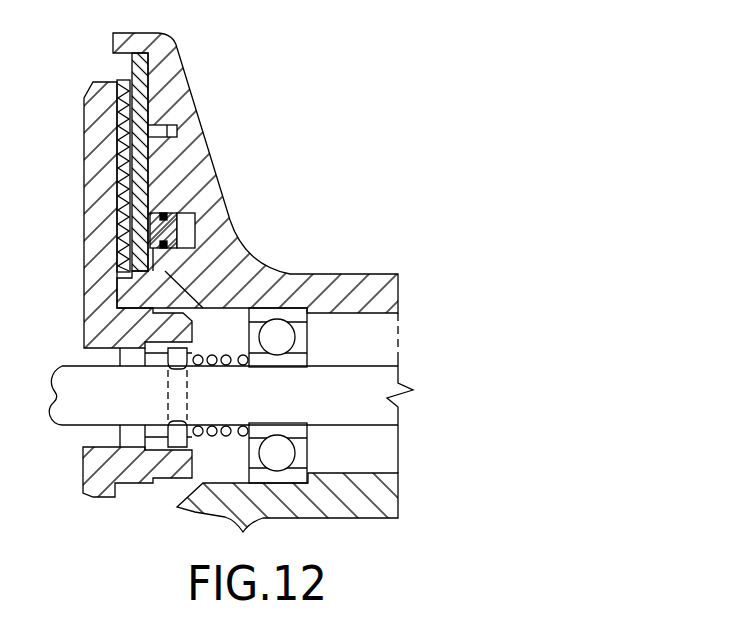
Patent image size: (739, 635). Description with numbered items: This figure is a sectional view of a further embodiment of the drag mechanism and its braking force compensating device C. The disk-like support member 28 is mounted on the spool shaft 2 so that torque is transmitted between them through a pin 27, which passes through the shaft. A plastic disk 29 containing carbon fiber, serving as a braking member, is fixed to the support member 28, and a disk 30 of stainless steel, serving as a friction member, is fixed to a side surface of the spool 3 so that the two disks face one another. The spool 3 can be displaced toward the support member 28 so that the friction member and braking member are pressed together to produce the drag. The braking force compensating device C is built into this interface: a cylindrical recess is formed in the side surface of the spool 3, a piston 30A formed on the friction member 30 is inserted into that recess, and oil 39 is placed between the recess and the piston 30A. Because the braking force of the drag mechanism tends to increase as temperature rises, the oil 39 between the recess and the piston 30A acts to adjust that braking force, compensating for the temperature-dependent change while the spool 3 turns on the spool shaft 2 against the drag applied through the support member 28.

The spool shaft 2 is at (70, 365).
The spool 3 is at (368, 280).
The pin 27 is at (177, 448).
The support member 28 is at (82, 205).
The plastic disk 29 is at (118, 80).
The disk 30 is at (147, 102).
The piston 30A is at (163, 217).
The oil 39 is at (186, 213).
The braking force compensating device C is at (204, 239).